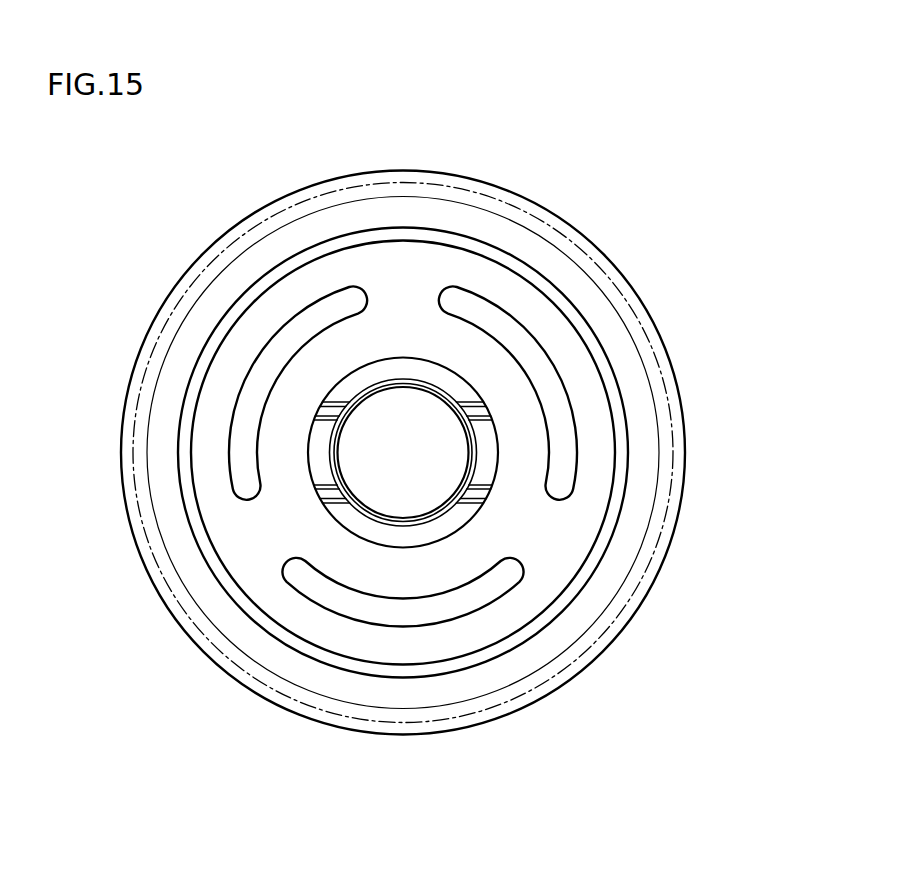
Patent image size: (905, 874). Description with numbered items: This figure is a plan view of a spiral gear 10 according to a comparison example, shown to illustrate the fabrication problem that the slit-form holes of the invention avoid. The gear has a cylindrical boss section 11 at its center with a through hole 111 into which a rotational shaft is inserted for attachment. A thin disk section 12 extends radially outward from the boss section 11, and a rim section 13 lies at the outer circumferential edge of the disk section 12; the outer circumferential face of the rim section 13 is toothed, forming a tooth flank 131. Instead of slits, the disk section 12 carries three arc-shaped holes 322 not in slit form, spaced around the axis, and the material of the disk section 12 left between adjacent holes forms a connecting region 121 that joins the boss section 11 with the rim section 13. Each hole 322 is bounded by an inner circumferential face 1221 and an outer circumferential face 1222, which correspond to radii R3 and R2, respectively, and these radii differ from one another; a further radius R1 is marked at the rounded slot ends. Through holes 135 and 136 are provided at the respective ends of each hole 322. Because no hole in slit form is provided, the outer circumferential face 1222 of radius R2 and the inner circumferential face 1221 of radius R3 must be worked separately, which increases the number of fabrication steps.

The spiral gear 10 is at (555, 180).
The boss section 11 is at (483, 438).
The through hole 111 is at (354, 408).
The disk section 12 is at (585, 508).
The connecting region 121 is at (263, 538).
The inner circumferential face 1221 is at (283, 366).
The outer circumferential face 1222 is at (236, 436).
The rim section 13 is at (613, 337).
The tooth flank 131 is at (677, 383).
The through hole 135 is at (343, 290).
The through hole 136 is at (457, 290).
The hole not in slit form 322 is at (278, 343).
The slot end radius R1 is at (282, 527).
The radius R2 is at (403, 452).
The radius R3 is at (473, 598).